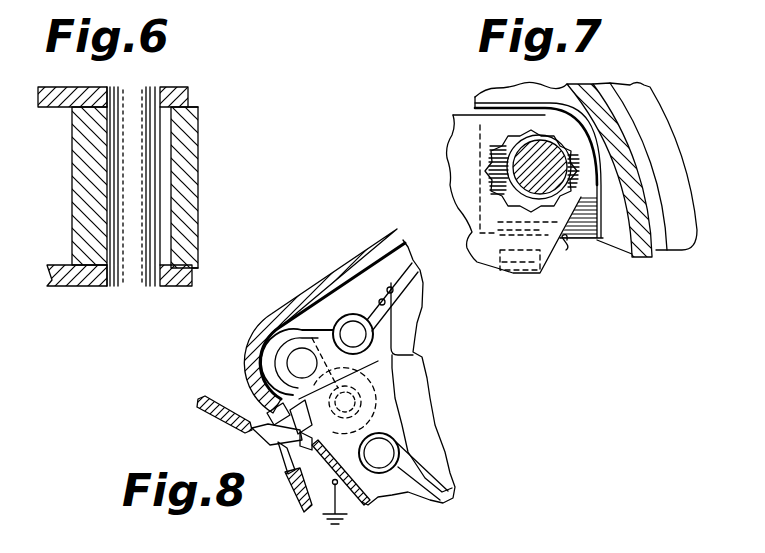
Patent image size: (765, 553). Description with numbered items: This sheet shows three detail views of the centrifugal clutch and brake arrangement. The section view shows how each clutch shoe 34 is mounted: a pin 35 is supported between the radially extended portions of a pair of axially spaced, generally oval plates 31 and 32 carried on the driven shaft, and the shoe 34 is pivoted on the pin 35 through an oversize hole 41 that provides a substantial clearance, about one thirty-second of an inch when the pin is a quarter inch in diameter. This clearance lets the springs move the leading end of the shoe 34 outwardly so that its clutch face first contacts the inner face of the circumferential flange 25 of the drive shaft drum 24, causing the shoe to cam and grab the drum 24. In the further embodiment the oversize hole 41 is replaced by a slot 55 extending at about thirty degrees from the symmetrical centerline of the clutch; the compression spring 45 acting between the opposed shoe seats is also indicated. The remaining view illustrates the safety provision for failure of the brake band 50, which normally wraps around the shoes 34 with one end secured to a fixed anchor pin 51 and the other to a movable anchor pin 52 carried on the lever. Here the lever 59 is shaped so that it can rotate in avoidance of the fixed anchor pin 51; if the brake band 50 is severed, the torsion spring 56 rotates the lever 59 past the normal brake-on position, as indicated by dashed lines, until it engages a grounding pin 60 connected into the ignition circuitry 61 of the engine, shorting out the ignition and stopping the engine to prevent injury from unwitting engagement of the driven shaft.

In FIG. 7, the drive shaft drum 24 is at (633, 161).
In FIG. 7, the circumferential flange 25 is at (631, 195).
In FIG. 6, the plate 31 is at (52, 87).
In FIG. 7, the plate 31 is at (465, 216).
In FIG. 6, the plate 32 is at (95, 285).
In FIG. 7, the plate 32 is at (494, 181).
In FIG. 6, the clutch shoe 34 is at (72, 178).
In FIG. 7, the clutch shoe 34 is at (525, 134).
In FIG. 8, the clutch shoe 34 is at (415, 389).
In FIG. 6, the pin 35 is at (142, 138).
In FIG. 7, the pin 35 is at (516, 163).
In FIG. 6, the oversize hole 41 is at (167, 192).
In FIG. 7, the compression spring 45 is at (566, 250).
In FIG. 8, the brake band 50 is at (391, 286).
In FIG. 8, the fixed anchor pin 51 is at (381, 451).
In FIG. 8, the movable anchor pin 52 is at (353, 326).
In FIG. 7, the slot 55 is at (518, 140).
In FIG. 8, the torsion spring 56 is at (296, 312).
In FIG. 8, the lever 59 is at (336, 315).
In FIG. 8, the grounding pin 60 is at (267, 432).
In FIG. 8, the ignition circuitry 61 is at (200, 412).